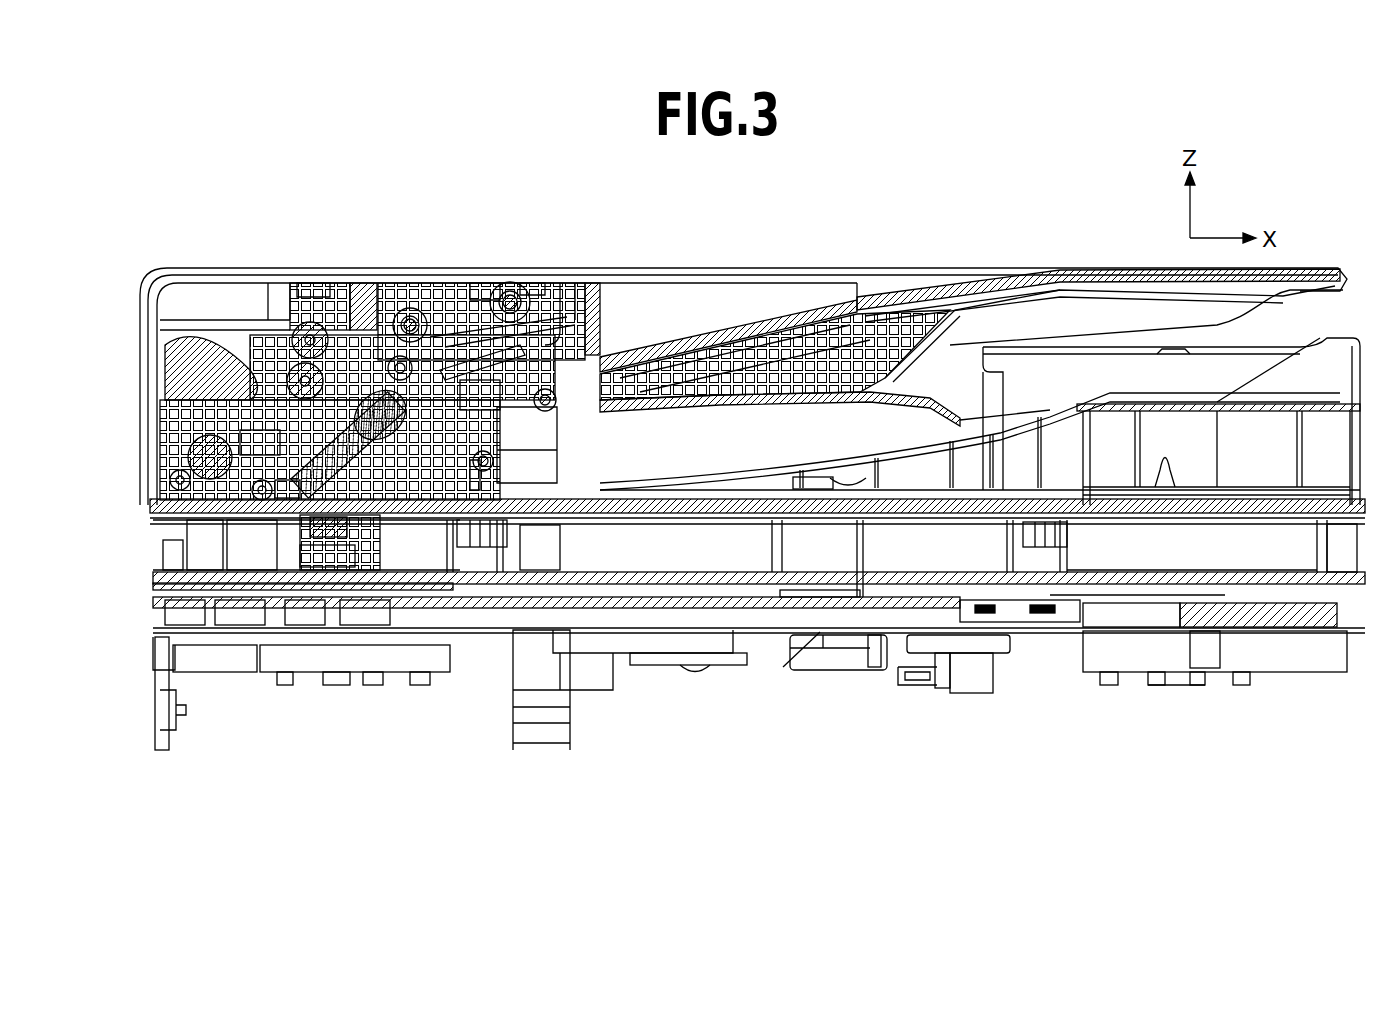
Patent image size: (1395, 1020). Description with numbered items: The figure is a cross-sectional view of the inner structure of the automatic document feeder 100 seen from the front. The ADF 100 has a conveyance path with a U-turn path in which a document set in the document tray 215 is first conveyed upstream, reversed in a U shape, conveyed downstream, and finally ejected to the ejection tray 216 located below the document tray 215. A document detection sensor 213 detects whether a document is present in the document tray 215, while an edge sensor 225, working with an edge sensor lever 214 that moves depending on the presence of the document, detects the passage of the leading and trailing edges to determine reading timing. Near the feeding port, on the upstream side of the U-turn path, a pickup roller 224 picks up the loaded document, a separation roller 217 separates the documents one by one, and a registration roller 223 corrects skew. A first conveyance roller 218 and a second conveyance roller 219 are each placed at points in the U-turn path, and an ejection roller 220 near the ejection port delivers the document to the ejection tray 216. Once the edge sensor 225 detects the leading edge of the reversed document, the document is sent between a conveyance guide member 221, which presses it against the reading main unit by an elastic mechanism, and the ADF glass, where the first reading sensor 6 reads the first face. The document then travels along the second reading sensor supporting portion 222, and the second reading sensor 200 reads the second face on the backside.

The automatic document feeder 100 is at (218, 268).
The first reading sensor 6 is at (338, 528).
The second reading sensor 200 is at (372, 505).
The document detection sensor 213 is at (472, 350).
The edge sensor lever 214 is at (245, 438).
The document tray 215 is at (655, 330).
The ejection tray 216 is at (676, 462).
The separation roller 217 is at (408, 316).
The first conveyance roller 218 is at (190, 462).
The second conveyance roller 219 is at (393, 437).
The ejection roller 220 is at (545, 411).
The conveyance guide member 221 is at (297, 497).
The second reading sensor supporting portion 222 is at (385, 430).
The registration roller 223 is at (262, 425).
The pickup roller 224 is at (512, 283).
The edge sensor 225 is at (256, 440).